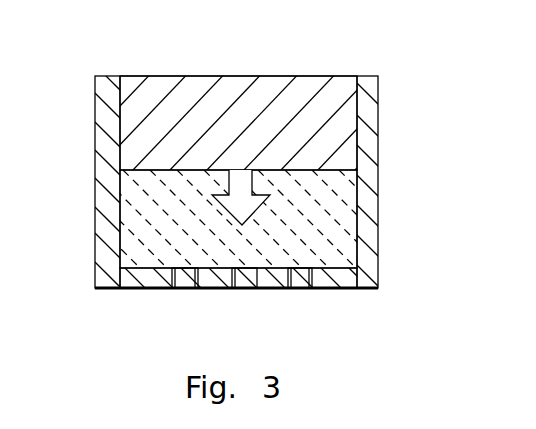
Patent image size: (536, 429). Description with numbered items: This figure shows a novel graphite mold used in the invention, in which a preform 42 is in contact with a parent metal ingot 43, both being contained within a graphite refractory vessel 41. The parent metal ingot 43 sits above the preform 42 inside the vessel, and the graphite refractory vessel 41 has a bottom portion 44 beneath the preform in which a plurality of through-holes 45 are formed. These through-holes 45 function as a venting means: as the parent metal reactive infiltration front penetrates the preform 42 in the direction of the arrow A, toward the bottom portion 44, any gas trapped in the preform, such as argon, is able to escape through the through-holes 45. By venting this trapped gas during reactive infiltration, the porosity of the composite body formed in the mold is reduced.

The graphite refractory vessel 41 is at (367, 140).
The preform 42 is at (342, 235).
The parent metal ingot 43 is at (318, 77).
The bottom portion 44 is at (213, 289).
The through-holes 45 is at (185, 283).
The arrow A is at (228, 204).